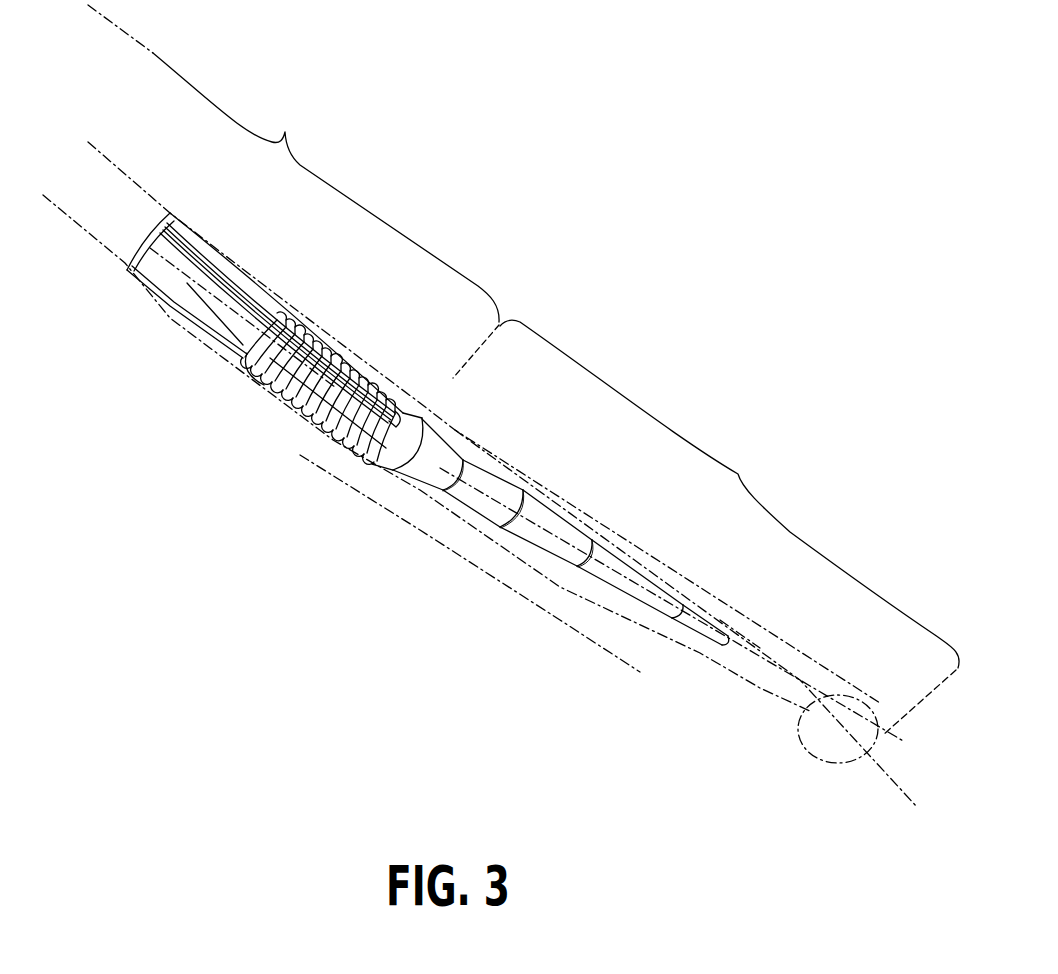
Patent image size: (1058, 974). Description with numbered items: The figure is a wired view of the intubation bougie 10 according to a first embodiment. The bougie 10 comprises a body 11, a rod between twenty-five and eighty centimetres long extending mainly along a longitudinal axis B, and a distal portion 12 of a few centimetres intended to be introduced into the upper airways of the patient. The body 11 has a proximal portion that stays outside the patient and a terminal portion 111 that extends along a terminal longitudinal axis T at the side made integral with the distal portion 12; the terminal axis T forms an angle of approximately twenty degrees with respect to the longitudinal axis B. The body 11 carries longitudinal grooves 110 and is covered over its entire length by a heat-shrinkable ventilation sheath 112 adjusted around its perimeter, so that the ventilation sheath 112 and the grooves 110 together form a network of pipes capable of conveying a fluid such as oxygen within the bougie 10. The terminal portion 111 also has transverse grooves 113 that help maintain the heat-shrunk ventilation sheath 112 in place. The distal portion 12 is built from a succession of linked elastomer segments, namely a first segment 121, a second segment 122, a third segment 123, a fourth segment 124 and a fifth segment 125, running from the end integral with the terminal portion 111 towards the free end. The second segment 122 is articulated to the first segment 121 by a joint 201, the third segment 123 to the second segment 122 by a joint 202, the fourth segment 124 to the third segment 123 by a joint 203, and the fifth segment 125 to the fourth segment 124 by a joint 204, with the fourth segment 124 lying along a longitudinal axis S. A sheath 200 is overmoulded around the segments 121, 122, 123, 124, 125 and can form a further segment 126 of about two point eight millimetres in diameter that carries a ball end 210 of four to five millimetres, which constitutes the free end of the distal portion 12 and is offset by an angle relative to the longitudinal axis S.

The bougie 10 is at (626, 263).
The body 11 is at (293, 191).
The distal portion 12 is at (729, 527).
The longitudinal grooves 110 is at (138, 265).
The terminal portion 111 is at (290, 437).
The ventilation sheath 112 is at (182, 318).
The transverse grooves 113 is at (285, 365).
The first segment 121 is at (417, 468).
The second segment 122 is at (473, 498).
The third segment 123 is at (517, 523).
The fourth segment 124 is at (627, 588).
The fifth segment 125 is at (707, 632).
The segment 126 is at (737, 643).
The sheath 200 is at (778, 643).
The joint 201 is at (452, 488).
The joint 202 is at (523, 492).
The joint 203 is at (576, 565).
The joint 204 is at (679, 611).
The ball end 210 is at (817, 747).
The longitudinal axis B is at (193, 283).
The terminal longitudinal axis T is at (369, 430).
The longitudinal axis S is at (787, 673).